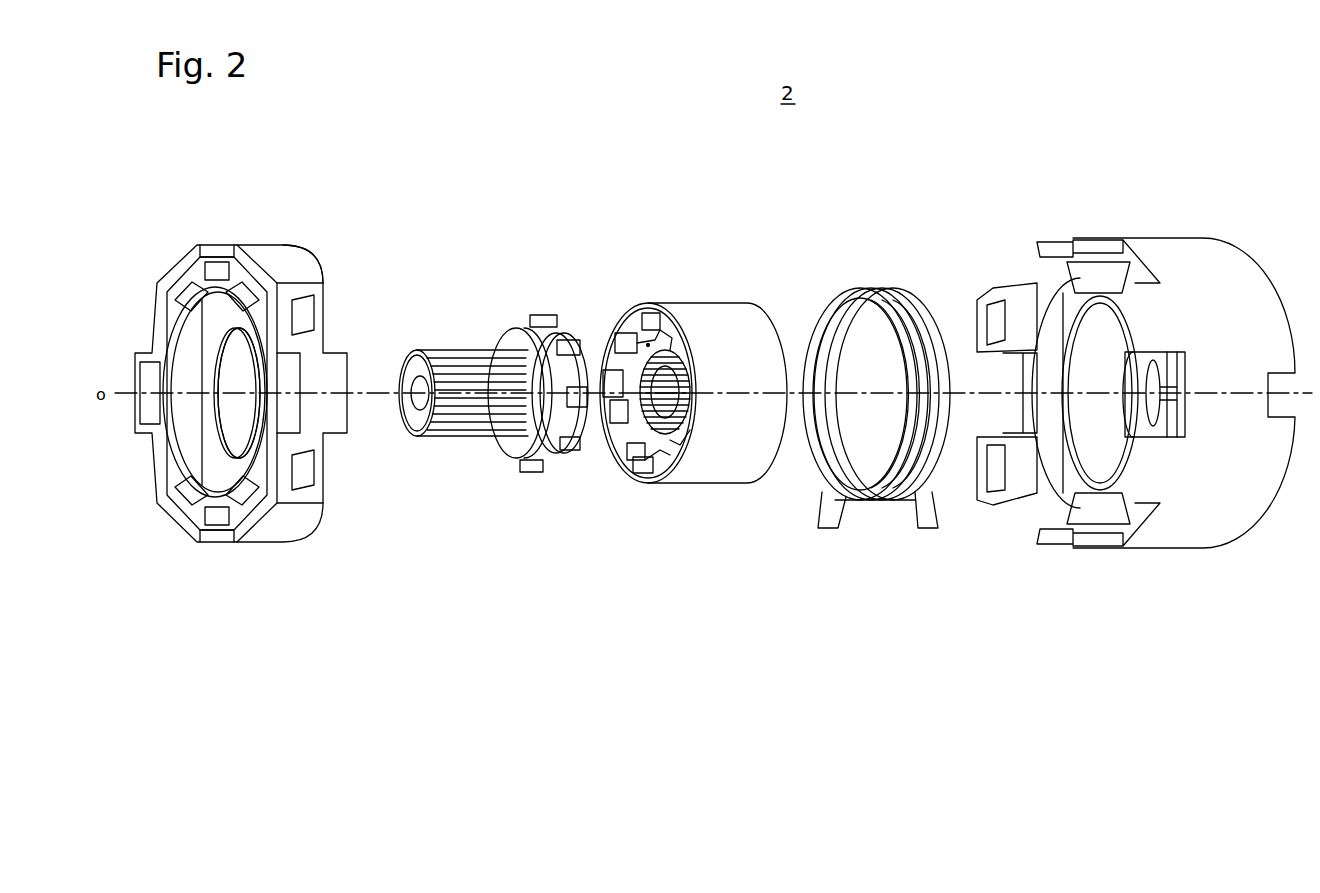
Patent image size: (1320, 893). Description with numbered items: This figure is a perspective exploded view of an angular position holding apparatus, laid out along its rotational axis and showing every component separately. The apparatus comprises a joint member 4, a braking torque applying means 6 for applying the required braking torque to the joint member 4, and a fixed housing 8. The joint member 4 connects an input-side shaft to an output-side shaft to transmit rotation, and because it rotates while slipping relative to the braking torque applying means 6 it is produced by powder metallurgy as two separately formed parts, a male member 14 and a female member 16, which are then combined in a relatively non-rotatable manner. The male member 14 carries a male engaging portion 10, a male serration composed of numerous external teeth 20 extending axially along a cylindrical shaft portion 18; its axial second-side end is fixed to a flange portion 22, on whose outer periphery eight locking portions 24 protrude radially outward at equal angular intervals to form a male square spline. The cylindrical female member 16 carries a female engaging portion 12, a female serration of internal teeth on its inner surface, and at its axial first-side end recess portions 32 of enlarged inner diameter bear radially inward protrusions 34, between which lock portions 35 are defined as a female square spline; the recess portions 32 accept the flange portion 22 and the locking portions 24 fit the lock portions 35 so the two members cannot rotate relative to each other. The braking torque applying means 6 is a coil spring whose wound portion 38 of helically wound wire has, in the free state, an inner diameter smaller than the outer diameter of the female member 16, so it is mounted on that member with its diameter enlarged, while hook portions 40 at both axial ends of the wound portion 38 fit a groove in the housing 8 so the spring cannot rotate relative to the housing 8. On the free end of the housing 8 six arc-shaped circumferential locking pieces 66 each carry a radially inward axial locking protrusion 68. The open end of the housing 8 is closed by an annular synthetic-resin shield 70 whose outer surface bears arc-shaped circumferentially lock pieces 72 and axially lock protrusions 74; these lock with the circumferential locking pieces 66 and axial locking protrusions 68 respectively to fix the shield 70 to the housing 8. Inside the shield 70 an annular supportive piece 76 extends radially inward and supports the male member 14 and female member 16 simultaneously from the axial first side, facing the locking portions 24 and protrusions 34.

The joint member 4 is at (696, 232).
The braking torque applying means 6 is at (875, 389).
The fixed housing 8 is at (1127, 362).
The male engaging portion 10 is at (484, 414).
The female engaging portion 12 is at (660, 412).
The male member 14 is at (510, 307).
The female member 16 is at (682, 384).
The cylindrical shaft portion 18 is at (415, 428).
The external teeth 20 is at (472, 432).
The flange portion 22 is at (510, 464).
The locking portions 24 is at (570, 458).
The recess portions 32 is at (646, 343).
The protrusions 34 is at (625, 455).
The lock portions 35 is at (603, 392).
The wound portion 38 is at (903, 300).
The hook portions 40 is at (826, 528).
The circumferential locking pieces 66 is at (1003, 420).
The axial locking protrusions 68 is at (1003, 318).
The shield 70 is at (220, 226).
The circumferentially lock pieces 72 is at (285, 262).
The axially lock protrusions 74 is at (292, 332).
The supportive piece 76 is at (226, 360).